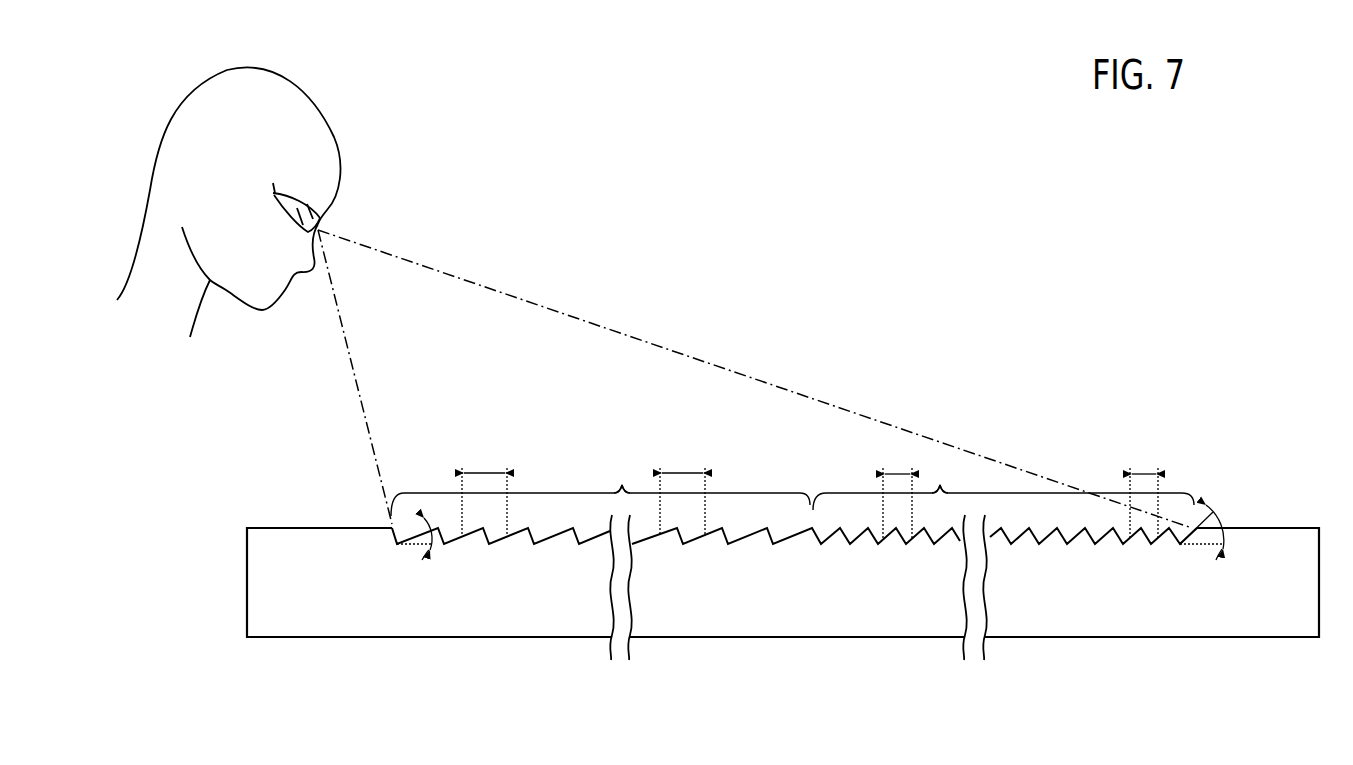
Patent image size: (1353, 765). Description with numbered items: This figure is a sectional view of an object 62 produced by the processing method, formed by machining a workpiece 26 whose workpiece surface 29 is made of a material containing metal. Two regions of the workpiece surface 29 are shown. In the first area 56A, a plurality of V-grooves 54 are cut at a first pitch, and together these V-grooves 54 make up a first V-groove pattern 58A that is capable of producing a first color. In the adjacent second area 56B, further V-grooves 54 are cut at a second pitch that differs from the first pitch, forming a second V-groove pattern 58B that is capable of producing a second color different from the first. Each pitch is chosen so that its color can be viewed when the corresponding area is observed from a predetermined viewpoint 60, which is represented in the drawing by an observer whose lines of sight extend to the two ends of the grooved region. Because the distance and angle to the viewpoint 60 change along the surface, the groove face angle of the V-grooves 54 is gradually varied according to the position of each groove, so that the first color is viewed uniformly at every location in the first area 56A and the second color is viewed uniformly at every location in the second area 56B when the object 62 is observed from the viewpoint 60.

The workpiece 26 is at (1170, 620).
The workpiece surface 29 is at (1257, 527).
The V-grooves 54 is at (559, 531).
The first area 56A is at (627, 478).
The second area 56B is at (945, 477).
The first V-groove pattern 58A is at (544, 508).
The second V-groove pattern 58B is at (1018, 508).
The predetermined viewpoint 60 is at (350, 218).
The object 62 is at (783, 520).